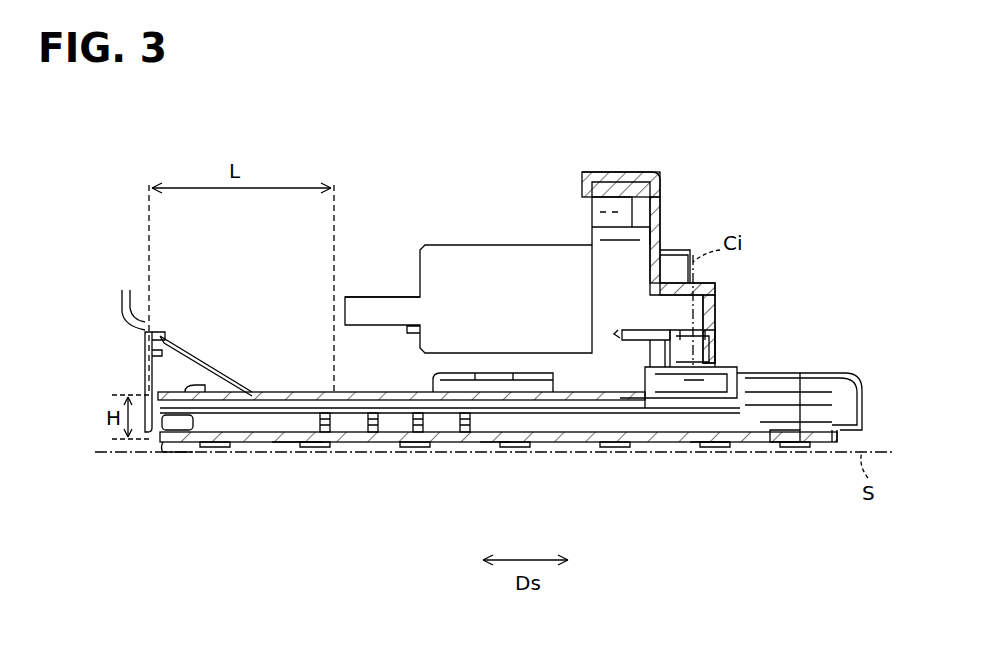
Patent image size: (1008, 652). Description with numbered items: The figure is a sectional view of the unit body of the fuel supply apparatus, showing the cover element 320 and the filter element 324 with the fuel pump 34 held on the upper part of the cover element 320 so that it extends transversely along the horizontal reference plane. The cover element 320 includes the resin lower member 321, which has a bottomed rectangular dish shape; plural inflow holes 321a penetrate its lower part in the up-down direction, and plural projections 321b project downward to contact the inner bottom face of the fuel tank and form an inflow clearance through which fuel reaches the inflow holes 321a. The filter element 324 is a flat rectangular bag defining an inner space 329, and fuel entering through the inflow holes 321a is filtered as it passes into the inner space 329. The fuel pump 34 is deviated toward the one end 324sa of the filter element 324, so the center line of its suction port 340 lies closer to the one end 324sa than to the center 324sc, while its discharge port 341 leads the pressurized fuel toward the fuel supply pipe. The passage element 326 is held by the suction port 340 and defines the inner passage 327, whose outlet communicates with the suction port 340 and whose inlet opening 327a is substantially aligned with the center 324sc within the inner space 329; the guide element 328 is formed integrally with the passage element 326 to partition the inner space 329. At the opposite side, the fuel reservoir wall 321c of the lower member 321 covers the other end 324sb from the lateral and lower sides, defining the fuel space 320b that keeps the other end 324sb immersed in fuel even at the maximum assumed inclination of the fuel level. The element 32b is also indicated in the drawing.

The fuel pump 34 is at (460, 245).
The discharge port 341 is at (390, 297).
The passage element 326 is at (565, 360).
The inner passage 327 is at (593, 360).
The opening 327a is at (517, 360).
The suction port 340 is at (723, 373).
The cover element 320 is at (799, 401).
The lower member 321 is at (850, 373).
The inflow holes 321a is at (672, 452).
The projections 321b is at (272, 452).
The fuel reservoir wall 321c is at (175, 392).
The fuel space 320b is at (150, 395).
The filter element 324 is at (240, 392).
The one end 324sa is at (847, 445).
The other end 324sb is at (153, 455).
The center 324sc is at (492, 452).
The guide element 328 is at (218, 452).
The inner space 329 is at (787, 447).
The mounting portion 32b is at (648, 452).